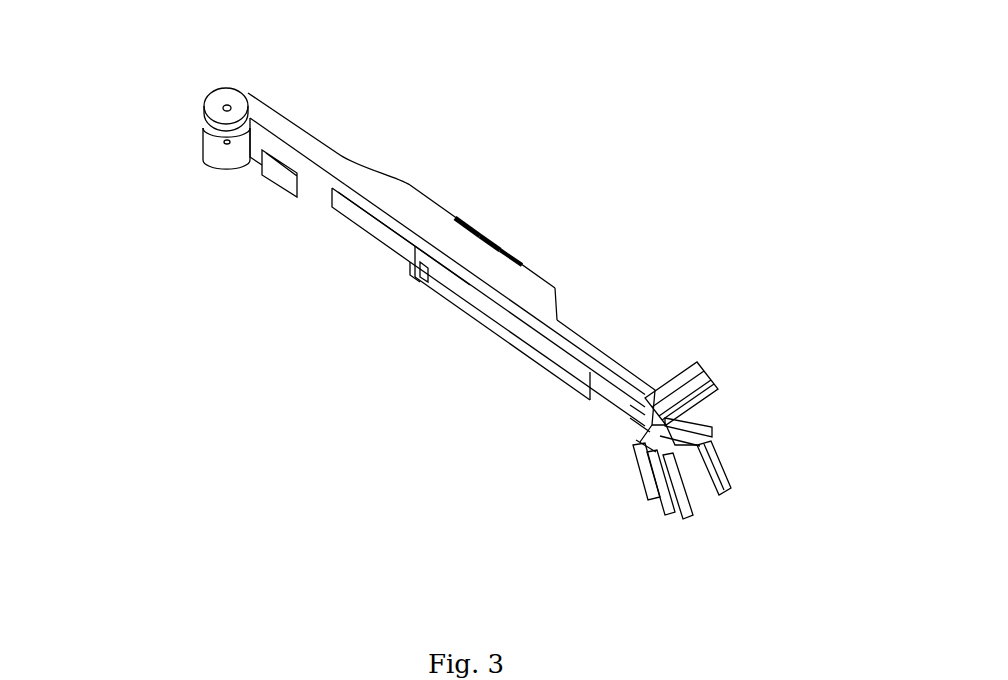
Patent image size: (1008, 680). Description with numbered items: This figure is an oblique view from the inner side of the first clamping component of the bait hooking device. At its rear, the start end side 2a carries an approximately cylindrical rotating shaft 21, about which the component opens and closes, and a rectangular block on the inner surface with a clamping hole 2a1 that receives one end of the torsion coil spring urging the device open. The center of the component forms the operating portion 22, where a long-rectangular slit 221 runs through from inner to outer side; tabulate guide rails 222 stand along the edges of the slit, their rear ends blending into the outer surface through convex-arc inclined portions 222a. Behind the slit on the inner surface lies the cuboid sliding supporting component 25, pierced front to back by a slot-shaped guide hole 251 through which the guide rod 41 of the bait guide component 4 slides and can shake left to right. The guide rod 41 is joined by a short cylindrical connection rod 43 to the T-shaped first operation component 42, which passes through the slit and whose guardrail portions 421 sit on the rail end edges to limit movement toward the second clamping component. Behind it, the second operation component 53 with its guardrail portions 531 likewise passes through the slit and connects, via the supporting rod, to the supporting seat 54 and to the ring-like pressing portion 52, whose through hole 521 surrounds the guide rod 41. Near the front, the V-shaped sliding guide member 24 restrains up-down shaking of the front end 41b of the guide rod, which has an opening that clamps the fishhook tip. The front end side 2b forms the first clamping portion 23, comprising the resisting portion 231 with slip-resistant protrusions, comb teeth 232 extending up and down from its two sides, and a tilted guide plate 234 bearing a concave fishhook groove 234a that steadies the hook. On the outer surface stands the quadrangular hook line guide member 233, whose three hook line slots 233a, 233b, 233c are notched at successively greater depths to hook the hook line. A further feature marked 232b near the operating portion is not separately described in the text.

The rotating shaft 21 is at (200, 114).
The start end side 2a is at (266, 101).
The clamping hole 2a1 is at (297, 195).
The operating portion 22 is at (452, 94).
The inclined portion 222a is at (370, 164).
The guide rail 222 is at (421, 192).
The guardrail portion 531 is at (462, 222).
The connection rod 43 is at (481, 230).
The guardrail portion 421 is at (499, 244).
The notch 232b is at (558, 297).
The sliding supporting component 25 is at (350, 218).
The guide hole 251 is at (415, 268).
The bait guide component 4 is at (445, 300).
The guide rod 41 is at (472, 316).
The first operation component 42 is at (503, 315).
The slit 221 is at (578, 373).
The second operation component 53 is at (428, 282).
The supporting seat 54 is at (413, 283).
The sliding guide member 24 is at (633, 412).
The hook line guide member 233 is at (697, 364).
The hook line slot 233a is at (708, 373).
The hook line slot 233b is at (713, 385).
The hook line slot 233c is at (717, 397).
The comb teeth 232 is at (712, 430).
The resisting portion 231 is at (653, 497).
The front end 41b is at (643, 487).
The guide plate 234 is at (727, 487).
The fishhook groove 234a is at (727, 503).
The pressing portion 52 is at (633, 423).
The through hole 521 is at (640, 450).
The first clamping portion 23 is at (770, 455).
The front end side 2b is at (777, 475).